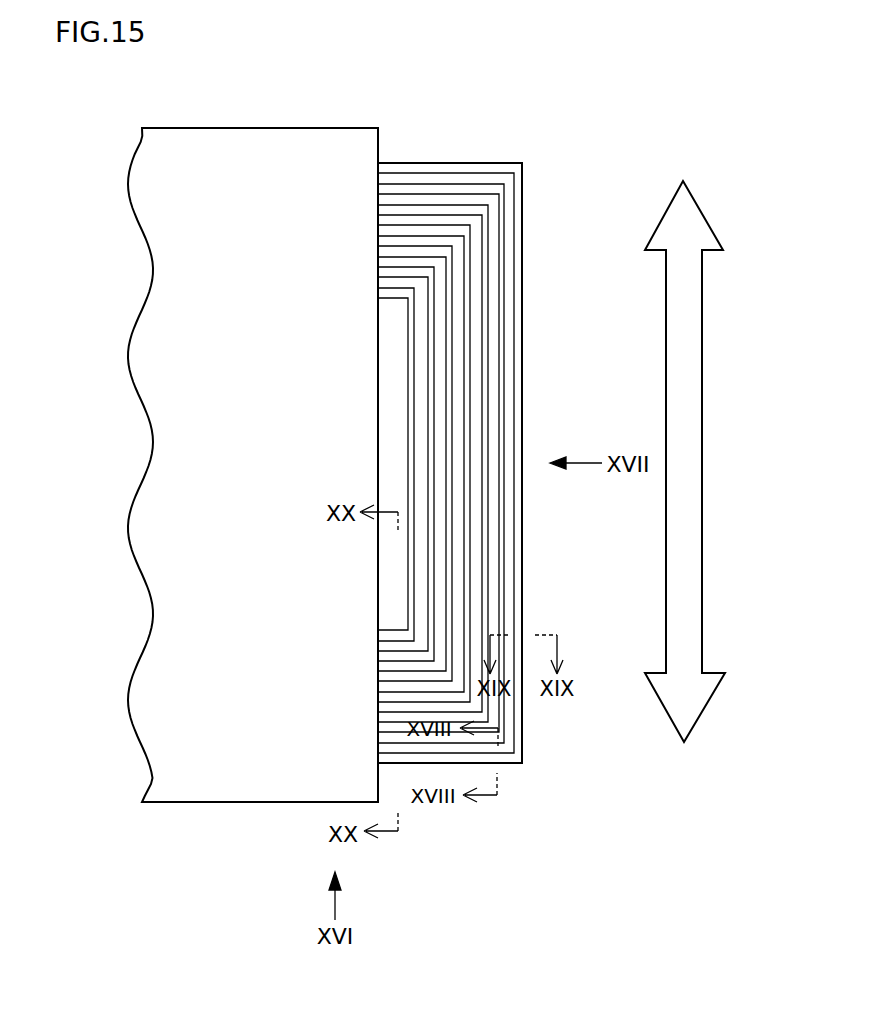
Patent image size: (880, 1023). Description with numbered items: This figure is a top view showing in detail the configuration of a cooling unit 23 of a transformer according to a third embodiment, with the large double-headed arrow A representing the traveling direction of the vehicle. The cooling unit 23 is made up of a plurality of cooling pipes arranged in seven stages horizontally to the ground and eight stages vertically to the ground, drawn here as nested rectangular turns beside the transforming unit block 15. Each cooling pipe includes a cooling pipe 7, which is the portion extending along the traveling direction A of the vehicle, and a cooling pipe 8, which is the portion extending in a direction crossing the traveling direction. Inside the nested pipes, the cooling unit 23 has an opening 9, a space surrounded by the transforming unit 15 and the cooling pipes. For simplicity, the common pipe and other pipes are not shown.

The substrate block 15 is at (252, 153).
The cooling pipe 8 is at (424, 163).
The cooling unit 23 is at (479, 407).
The opening 9 is at (395, 415).
The cooling pipe 7 is at (522, 518).
The traveling direction A is at (697, 466).